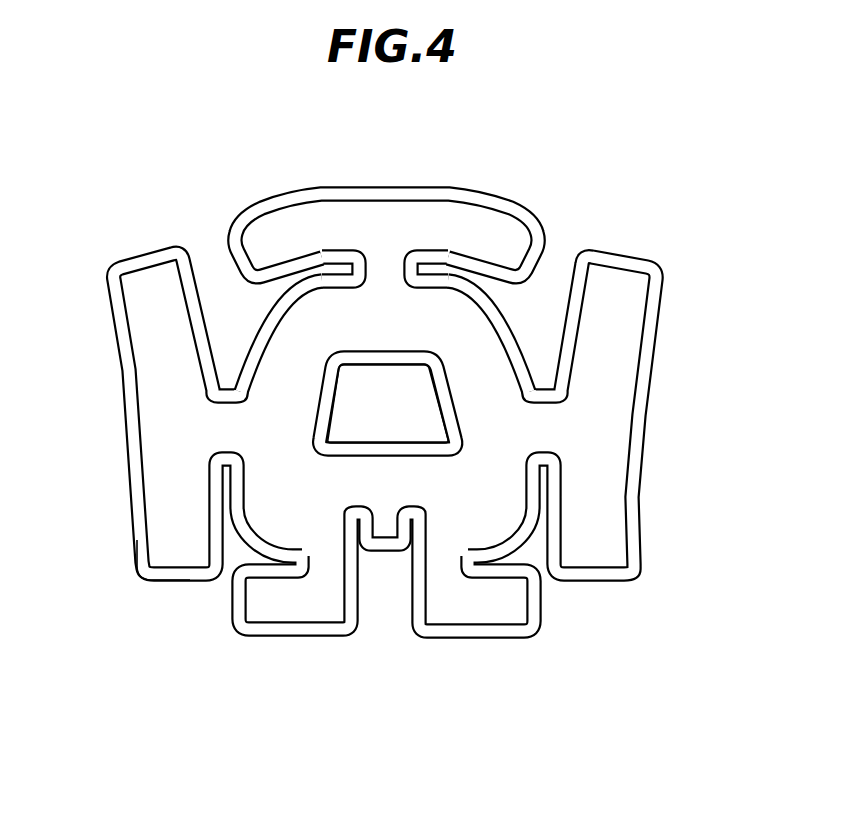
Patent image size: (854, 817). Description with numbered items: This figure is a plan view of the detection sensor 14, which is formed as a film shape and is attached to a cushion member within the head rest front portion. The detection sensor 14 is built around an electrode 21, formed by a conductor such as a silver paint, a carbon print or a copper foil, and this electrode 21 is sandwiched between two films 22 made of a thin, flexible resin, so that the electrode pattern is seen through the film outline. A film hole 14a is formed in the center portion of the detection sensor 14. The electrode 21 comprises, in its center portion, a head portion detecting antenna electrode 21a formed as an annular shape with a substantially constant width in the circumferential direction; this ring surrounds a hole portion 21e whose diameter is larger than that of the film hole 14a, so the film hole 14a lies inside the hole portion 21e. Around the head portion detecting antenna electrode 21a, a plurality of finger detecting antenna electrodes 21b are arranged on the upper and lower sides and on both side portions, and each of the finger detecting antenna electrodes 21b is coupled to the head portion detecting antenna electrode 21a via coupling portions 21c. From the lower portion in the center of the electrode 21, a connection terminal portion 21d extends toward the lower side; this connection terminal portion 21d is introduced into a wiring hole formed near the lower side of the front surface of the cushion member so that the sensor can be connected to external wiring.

The detection sensor 14 is at (518, 197).
The film hole 14a is at (434, 383).
The electrode 21 is at (265, 310).
The head portion detecting antenna electrode 21a is at (507, 347).
The finger detecting antenna electrodes 21b is at (390, 199).
The coupling portions 21c is at (228, 403).
The connection terminal portion 21d is at (380, 528).
The hole portion 21e is at (318, 390).
The films 22 is at (157, 570).